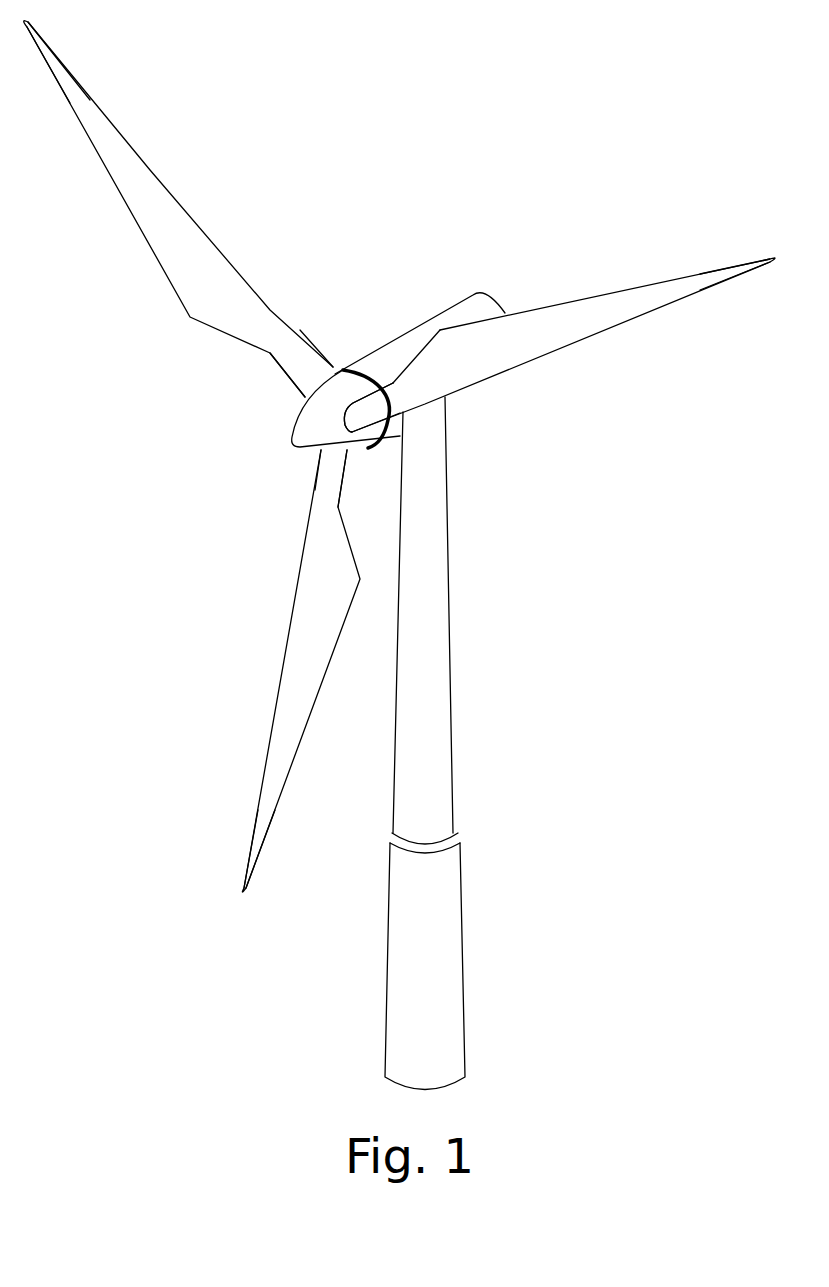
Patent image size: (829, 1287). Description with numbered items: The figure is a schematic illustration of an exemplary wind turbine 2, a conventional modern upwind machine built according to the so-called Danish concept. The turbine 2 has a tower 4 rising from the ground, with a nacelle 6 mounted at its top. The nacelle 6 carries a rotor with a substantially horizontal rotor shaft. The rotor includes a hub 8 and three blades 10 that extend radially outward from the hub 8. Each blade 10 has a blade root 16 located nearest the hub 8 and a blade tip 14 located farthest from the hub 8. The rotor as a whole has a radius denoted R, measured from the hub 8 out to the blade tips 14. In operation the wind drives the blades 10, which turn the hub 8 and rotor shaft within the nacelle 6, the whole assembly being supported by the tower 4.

The wind turbine 2 is at (524, 713).
The tower 4 is at (445, 593).
The nacelle 6 is at (397, 355).
The hub 8 is at (305, 428).
The blades 10 is at (185, 296).
The blade tip 14 is at (100, 127).
The blade root 16 is at (300, 380).
The radius R is at (337, 366).